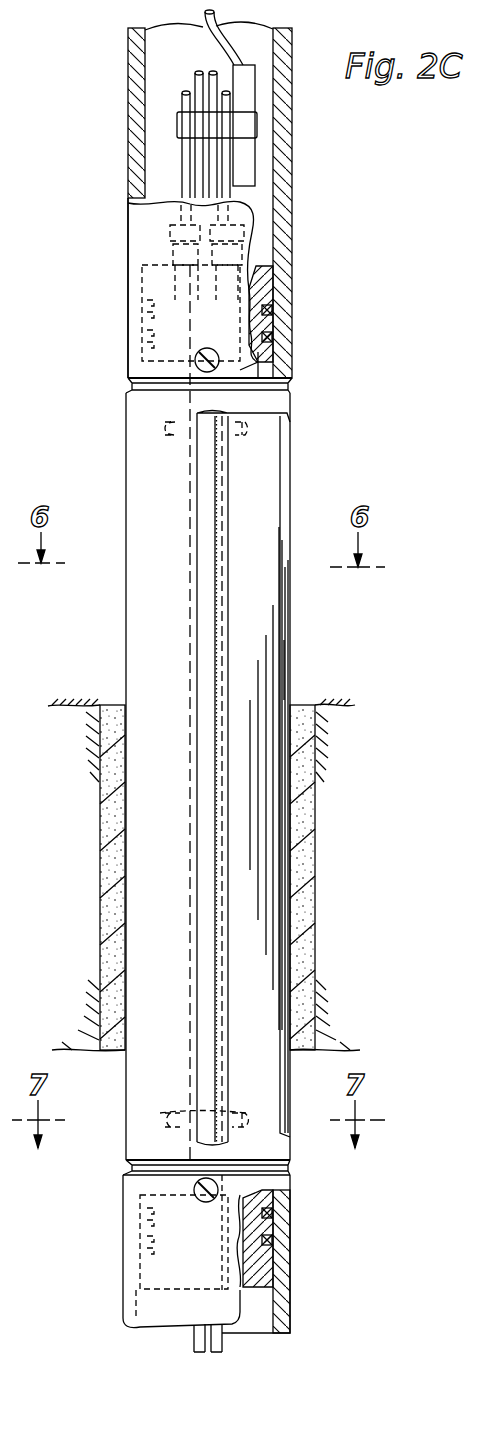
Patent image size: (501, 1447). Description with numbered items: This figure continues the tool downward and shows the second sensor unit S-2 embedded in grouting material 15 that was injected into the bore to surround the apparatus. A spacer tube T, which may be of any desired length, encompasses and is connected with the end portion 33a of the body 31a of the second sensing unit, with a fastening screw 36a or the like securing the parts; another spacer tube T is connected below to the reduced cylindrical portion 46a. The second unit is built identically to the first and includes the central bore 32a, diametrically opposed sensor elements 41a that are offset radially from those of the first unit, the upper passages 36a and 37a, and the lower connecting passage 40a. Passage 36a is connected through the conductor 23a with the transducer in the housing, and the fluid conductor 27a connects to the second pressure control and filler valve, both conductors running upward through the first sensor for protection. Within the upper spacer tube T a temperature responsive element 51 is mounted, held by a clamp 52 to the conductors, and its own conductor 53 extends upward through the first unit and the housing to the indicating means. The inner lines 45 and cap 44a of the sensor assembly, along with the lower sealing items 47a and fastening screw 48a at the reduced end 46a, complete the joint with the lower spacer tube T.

The conductor 53 is at (240, 50).
The temperature responsive element 51 is at (246, 150).
The conductor 23a is at (182, 100).
The fluid conductor 27a is at (228, 101).
The clamp 52 is at (185, 125).
The end portion 33a is at (265, 282).
The upper passage 37a is at (282, 352).
The upper passage 36a is at (200, 362).
The body 31a is at (136, 455).
The central bore 32a is at (190, 602).
The sensor elements 41a is at (258, 472).
The cap 44a is at (263, 412).
The wires 45 is at (258, 592).
The sensor unit S-2 is at (290, 646).
The grouting material 15 is at (300, 712).
The lower connecting passage 40a is at (168, 1120).
The spacer tube T is at (123, 1297).
The reduced cylindrical portion 46a is at (262, 1264).
The screws 47a is at (266, 1232).
The screw 48a is at (195, 1185).